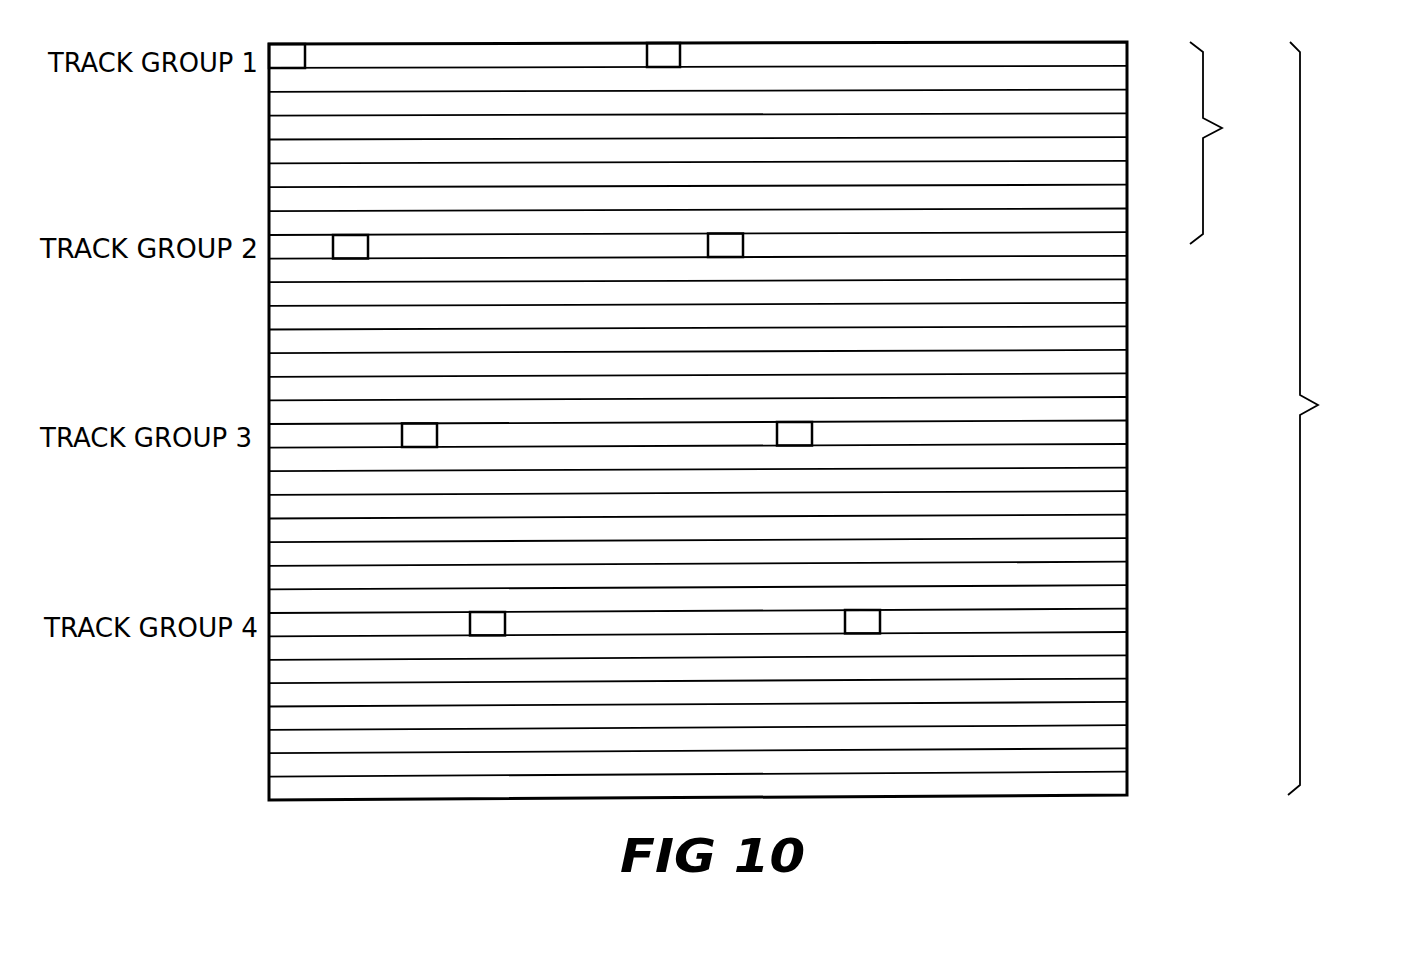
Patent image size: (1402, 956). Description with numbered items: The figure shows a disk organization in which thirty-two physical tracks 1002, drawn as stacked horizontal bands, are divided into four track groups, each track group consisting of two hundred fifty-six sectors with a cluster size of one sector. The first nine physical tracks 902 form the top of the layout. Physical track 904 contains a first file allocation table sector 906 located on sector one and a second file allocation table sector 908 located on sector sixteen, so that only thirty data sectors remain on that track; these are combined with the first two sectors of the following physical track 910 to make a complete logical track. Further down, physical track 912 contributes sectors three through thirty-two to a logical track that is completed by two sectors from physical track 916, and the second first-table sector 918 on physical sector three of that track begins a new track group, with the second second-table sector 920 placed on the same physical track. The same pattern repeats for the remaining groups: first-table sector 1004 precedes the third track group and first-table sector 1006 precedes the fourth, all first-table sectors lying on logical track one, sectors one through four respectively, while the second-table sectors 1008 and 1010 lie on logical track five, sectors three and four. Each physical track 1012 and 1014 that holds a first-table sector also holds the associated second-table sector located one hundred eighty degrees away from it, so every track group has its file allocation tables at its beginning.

The physical tracks 902 is at (1235, 143).
The physical track 1001 904 is at (1128, 54).
The FAT 1 sector 906 is at (286, 58).
The FAT 2 sector 908 is at (672, 55).
The following physical track 910 is at (262, 88).
The physical track 1008 912 is at (258, 232).
The physical track 1009 916 is at (1128, 240).
The second FAT 1 sector 918 is at (360, 247).
The second FAT 2 sector 920 is at (735, 245).
The physical tracks 1002 is at (1339, 418).
The FAT 1 sector 1004 is at (429, 435).
The FAT 1 sector 1006 is at (497, 624).
The FAT 2 sector 1008 is at (804, 433).
The FAT 2 sector 1010 is at (872, 622).
The physical track 1012 is at (1116, 432).
The physical track 1014 is at (1116, 622).